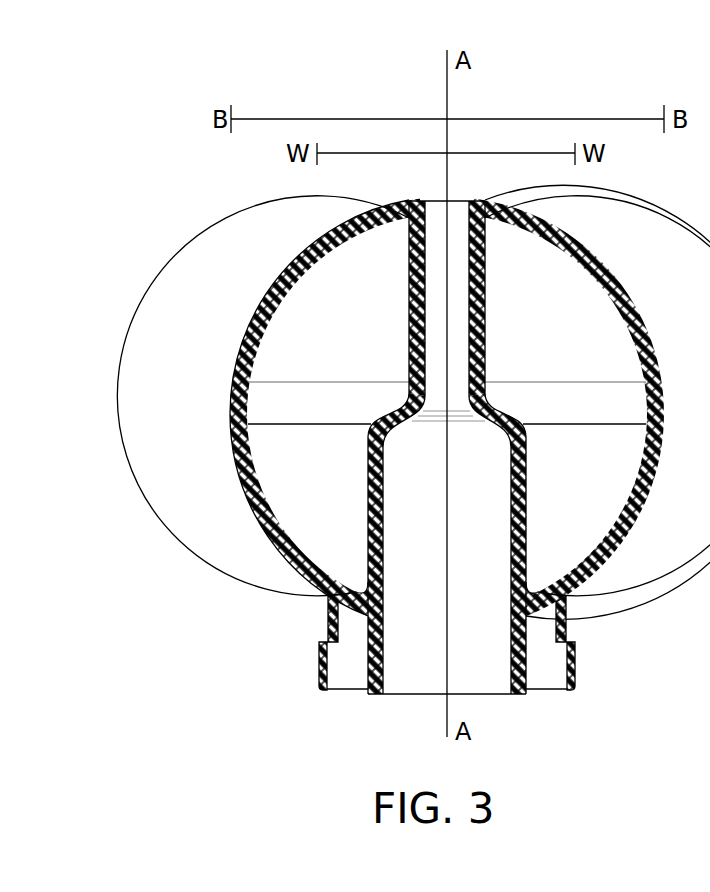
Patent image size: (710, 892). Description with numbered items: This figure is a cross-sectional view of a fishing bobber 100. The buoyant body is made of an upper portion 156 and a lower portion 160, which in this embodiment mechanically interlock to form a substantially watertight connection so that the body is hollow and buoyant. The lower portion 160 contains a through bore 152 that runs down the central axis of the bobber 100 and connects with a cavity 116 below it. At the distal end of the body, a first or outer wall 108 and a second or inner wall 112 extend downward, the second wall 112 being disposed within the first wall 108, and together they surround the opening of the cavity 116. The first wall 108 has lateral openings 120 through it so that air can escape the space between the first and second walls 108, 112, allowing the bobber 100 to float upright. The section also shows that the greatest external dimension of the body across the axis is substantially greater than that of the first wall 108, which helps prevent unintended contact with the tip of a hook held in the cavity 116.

The bobber 100 is at (413, 464).
The first wall 108 is at (578, 690).
The second wall 112 is at (520, 697).
The cavity 116 is at (412, 716).
The lateral openings 120 is at (309, 622).
The through bore 152 is at (432, 187).
The upper portion 156 is at (232, 385).
The lower portion 160 is at (252, 520).